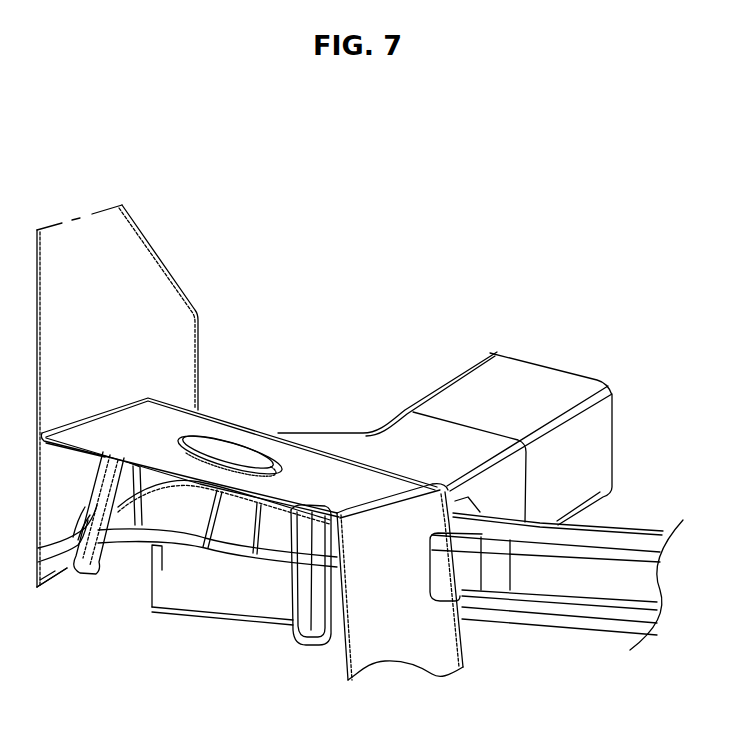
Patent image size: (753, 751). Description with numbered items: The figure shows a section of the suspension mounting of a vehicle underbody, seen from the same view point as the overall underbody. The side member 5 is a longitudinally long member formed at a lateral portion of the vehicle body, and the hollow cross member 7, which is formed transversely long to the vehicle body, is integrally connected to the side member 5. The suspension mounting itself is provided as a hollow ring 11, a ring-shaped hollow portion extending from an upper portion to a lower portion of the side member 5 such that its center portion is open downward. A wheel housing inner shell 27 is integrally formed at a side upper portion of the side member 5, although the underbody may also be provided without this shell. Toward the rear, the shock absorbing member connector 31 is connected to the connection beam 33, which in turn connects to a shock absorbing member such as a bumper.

The wheel housing inner shell 27 is at (148, 267).
The side member 5 is at (387, 441).
The shock absorbing member connector 31 is at (437, 428).
The connection beam 33 is at (530, 380).
The hollow cross member 7 is at (570, 573).
The hollow ring 11 is at (73, 576).